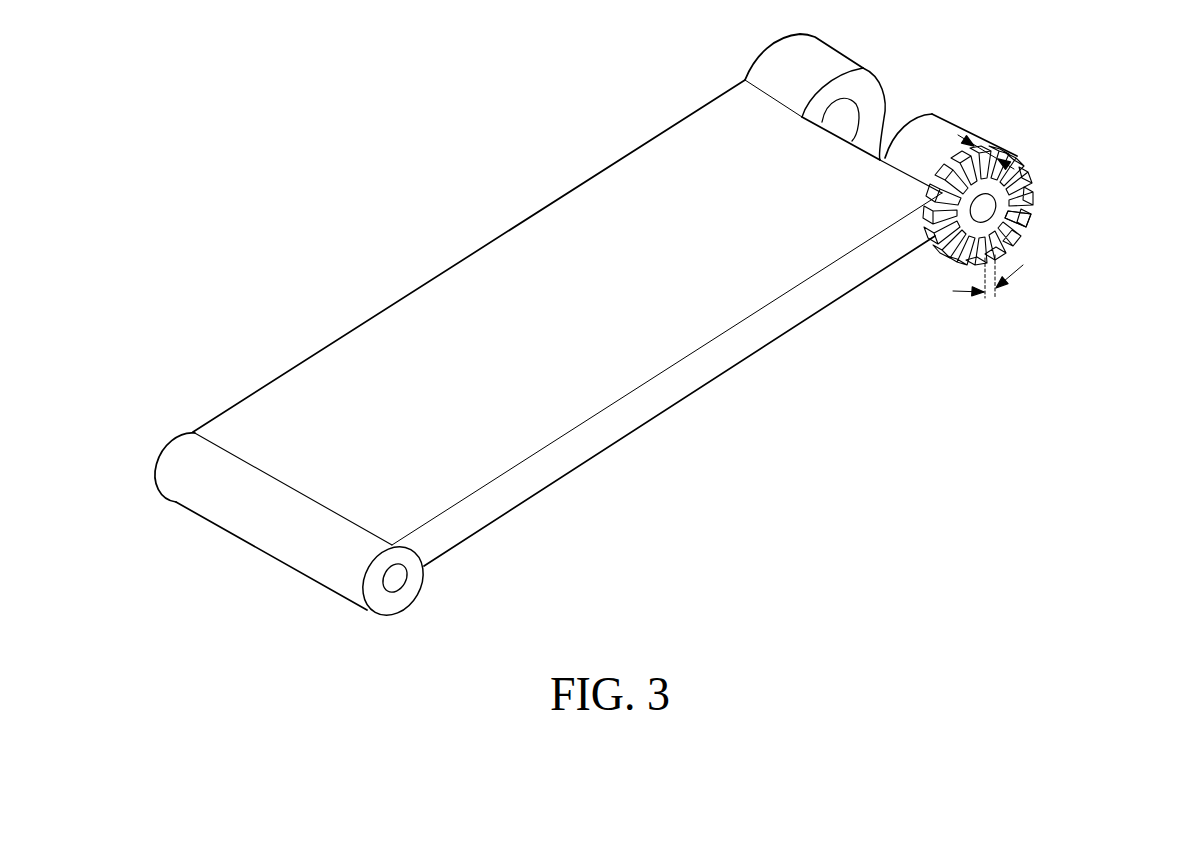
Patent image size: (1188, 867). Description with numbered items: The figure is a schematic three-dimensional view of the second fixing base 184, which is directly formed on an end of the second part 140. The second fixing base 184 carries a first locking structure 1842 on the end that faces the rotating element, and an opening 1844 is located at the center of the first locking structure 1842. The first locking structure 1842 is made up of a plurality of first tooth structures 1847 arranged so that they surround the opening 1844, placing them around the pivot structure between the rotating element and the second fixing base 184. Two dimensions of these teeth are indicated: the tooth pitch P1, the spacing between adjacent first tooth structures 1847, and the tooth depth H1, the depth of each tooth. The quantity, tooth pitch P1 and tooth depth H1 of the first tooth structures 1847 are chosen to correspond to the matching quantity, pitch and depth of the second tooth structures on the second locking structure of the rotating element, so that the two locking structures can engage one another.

The second part 140 is at (434, 186).
The second fixing base 184 is at (943, 130).
The first locking structure 1842 is at (1050, 183).
The first tooth structures 1847 is at (1002, 207).
The opening 1844 is at (1013, 230).
The tooth depth H1 is at (970, 132).
The tooth pitch P1 is at (953, 292).